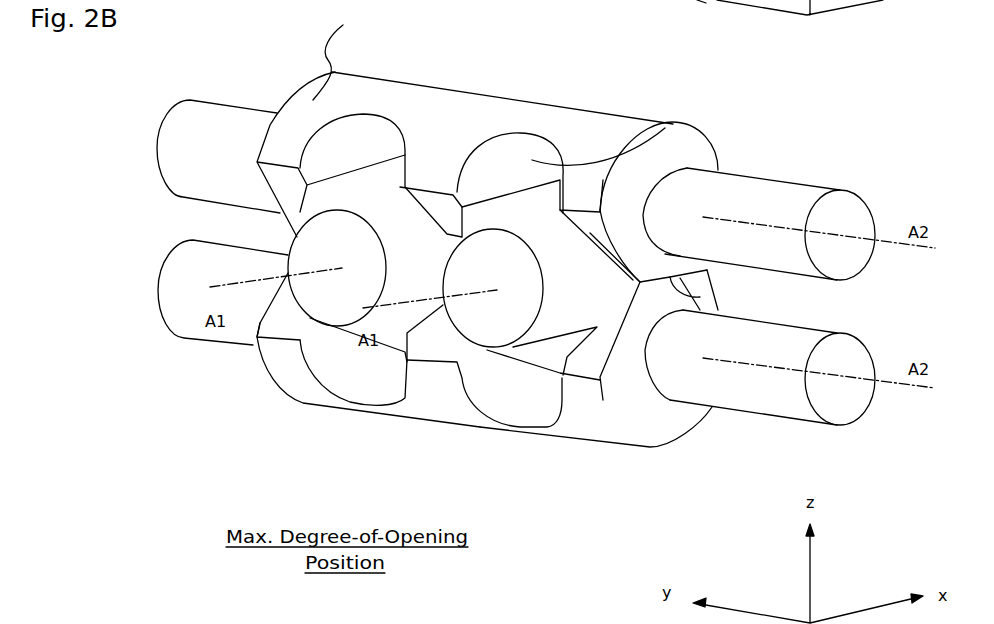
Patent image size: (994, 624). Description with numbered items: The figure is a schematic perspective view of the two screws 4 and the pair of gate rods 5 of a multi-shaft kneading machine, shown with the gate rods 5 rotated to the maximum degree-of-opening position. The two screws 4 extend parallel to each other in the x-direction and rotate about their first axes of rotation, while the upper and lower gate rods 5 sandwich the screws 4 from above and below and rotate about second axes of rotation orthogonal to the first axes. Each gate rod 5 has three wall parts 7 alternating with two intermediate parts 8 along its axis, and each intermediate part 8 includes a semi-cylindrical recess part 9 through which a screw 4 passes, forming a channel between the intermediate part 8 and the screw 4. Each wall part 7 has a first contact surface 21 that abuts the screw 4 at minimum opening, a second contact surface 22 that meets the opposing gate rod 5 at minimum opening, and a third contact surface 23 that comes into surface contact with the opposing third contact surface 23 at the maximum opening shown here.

The screw 4 is at (327, 300).
The gate rod 5 is at (763, 193).
The wall part 7 is at (632, 72).
The intermediate part 8 is at (372, 110).
The recess part 9 is at (347, 188).
The first contact surface 21 is at (485, 155).
The second contact surface 22 is at (595, 232).
The third contact surface 23 is at (700, 297).